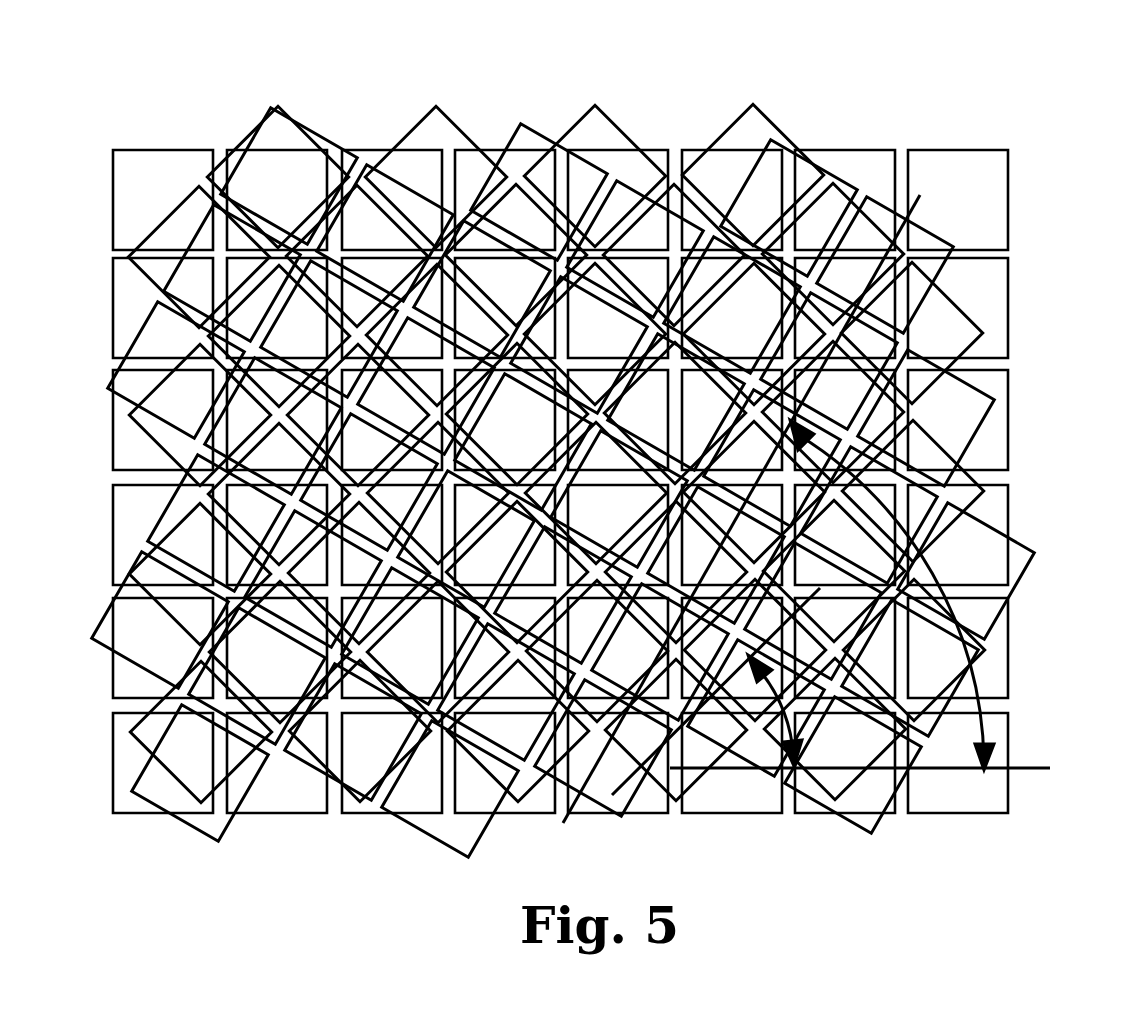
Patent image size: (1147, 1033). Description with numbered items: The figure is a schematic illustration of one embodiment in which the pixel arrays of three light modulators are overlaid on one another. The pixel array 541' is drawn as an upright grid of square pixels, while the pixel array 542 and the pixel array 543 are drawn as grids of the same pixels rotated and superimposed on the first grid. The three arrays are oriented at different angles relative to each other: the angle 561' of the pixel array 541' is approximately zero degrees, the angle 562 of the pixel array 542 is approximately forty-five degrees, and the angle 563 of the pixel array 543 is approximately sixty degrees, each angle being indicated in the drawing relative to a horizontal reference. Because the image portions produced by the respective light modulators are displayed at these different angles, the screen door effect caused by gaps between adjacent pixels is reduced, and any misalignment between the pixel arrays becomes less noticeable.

The pixel array 541' is at (630, 441).
The pixel array 542 is at (556, 453).
The pixel array 543 is at (563, 483).
The angle 561' is at (882, 733).
The angle 562 is at (797, 722).
The angle 563 is at (977, 678).